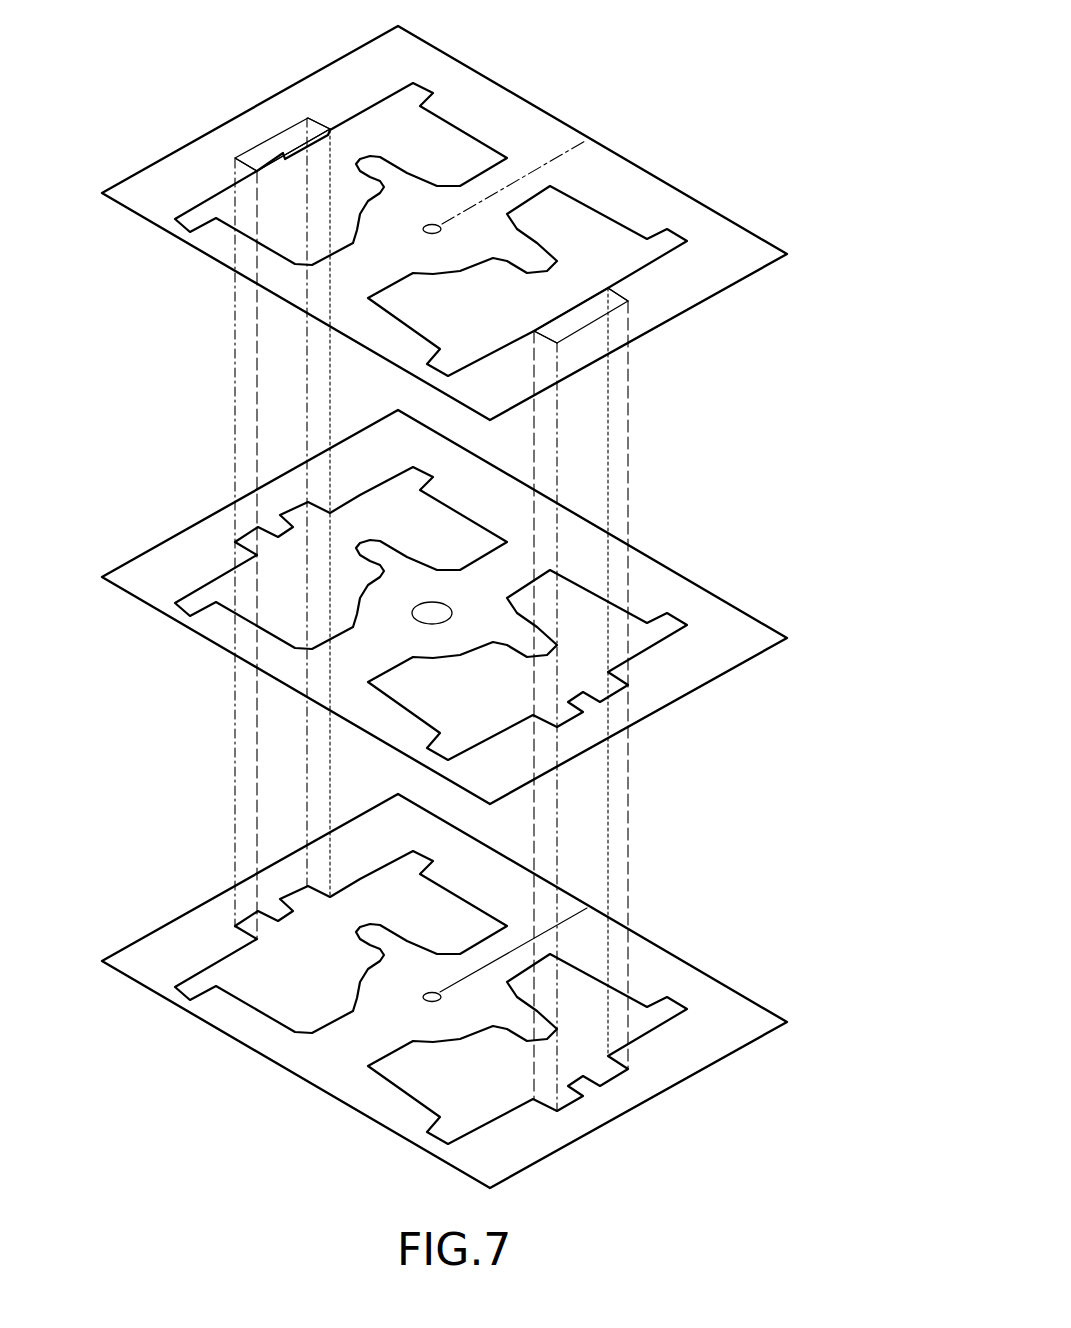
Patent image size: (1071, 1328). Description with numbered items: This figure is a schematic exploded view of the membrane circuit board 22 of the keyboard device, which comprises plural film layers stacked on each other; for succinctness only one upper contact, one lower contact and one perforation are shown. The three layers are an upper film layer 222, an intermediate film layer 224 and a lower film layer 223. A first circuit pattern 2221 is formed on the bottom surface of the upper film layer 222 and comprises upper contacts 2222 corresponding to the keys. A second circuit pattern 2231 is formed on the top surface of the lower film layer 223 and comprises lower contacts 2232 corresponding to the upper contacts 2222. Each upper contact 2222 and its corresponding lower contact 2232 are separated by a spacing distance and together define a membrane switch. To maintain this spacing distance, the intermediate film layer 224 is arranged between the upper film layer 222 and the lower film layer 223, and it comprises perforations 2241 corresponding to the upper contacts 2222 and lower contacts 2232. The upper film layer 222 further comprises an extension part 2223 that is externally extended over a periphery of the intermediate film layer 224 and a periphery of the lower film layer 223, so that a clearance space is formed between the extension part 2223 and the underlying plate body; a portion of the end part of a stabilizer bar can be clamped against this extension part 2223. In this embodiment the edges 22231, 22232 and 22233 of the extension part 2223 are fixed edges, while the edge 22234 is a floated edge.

The membrane circuit board 22 is at (722, 37).
The upper film layer 222 is at (675, 173).
The first circuit pattern 2221 is at (559, 146).
The upper contact 2222 is at (431, 225).
The extension part 2223 is at (287, 136).
The edge of the extension part 22231 is at (276, 132).
The edge of the extension part 22232 is at (322, 126).
The edge of the extension part 22233 is at (238, 160).
The edge of the extension part 22234 is at (278, 152).
The intermediate film layer 224 is at (722, 582).
The perforation 2241 is at (431, 610).
The lower film layer 223 is at (722, 968).
The second circuit pattern 2231 is at (500, 950).
The lower contact 2232 is at (441, 998).